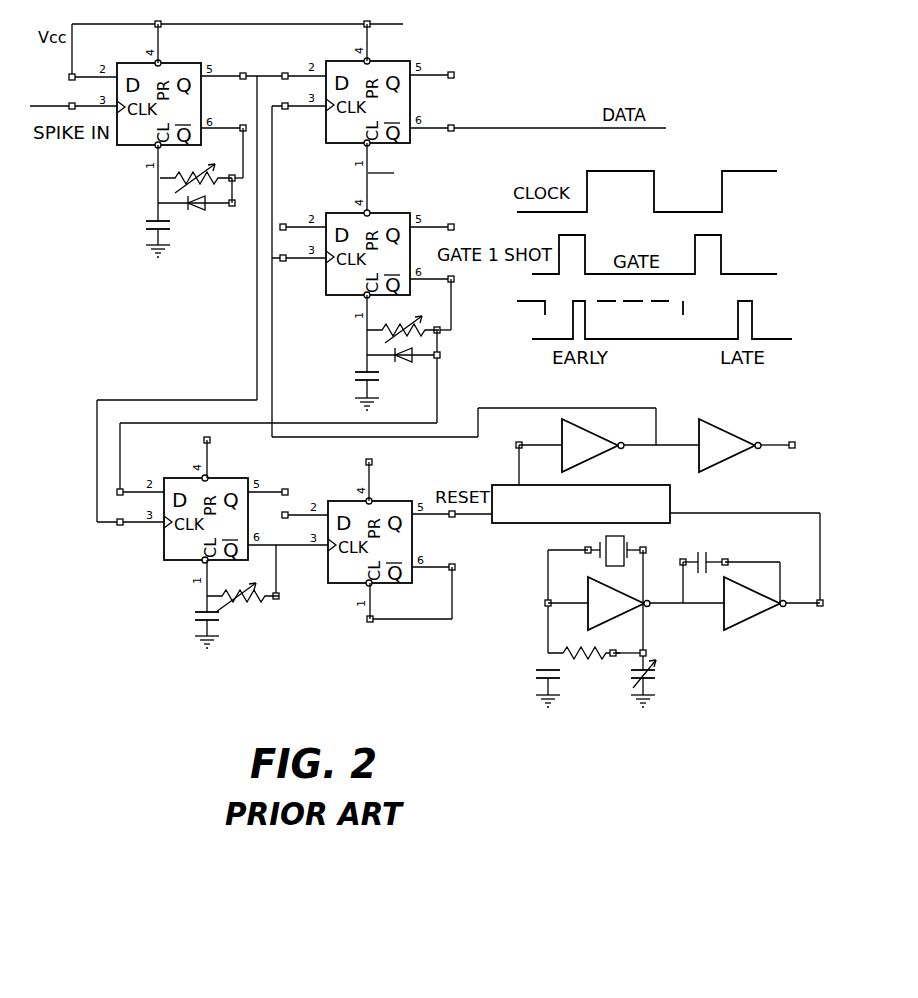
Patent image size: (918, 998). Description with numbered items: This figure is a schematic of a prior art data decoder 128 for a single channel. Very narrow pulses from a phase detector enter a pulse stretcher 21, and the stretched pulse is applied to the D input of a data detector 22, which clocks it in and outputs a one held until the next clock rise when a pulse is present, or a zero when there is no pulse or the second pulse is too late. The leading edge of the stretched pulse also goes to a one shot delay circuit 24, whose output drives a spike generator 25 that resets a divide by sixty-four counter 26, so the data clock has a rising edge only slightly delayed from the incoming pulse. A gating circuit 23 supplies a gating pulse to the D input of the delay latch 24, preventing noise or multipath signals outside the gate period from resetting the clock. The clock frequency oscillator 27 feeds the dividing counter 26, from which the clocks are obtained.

The pulse stretcher 21 is at (128, 137).
The data detector 22 is at (410, 100).
The gating circuit 23 is at (390, 218).
The one shot delay circuit 24 is at (170, 556).
The spike generator 25 is at (350, 578).
The divide by 64 counter 26 is at (667, 497).
The clock frequency oscillator 27 is at (693, 637).
The decoder 128 is at (608, 730).